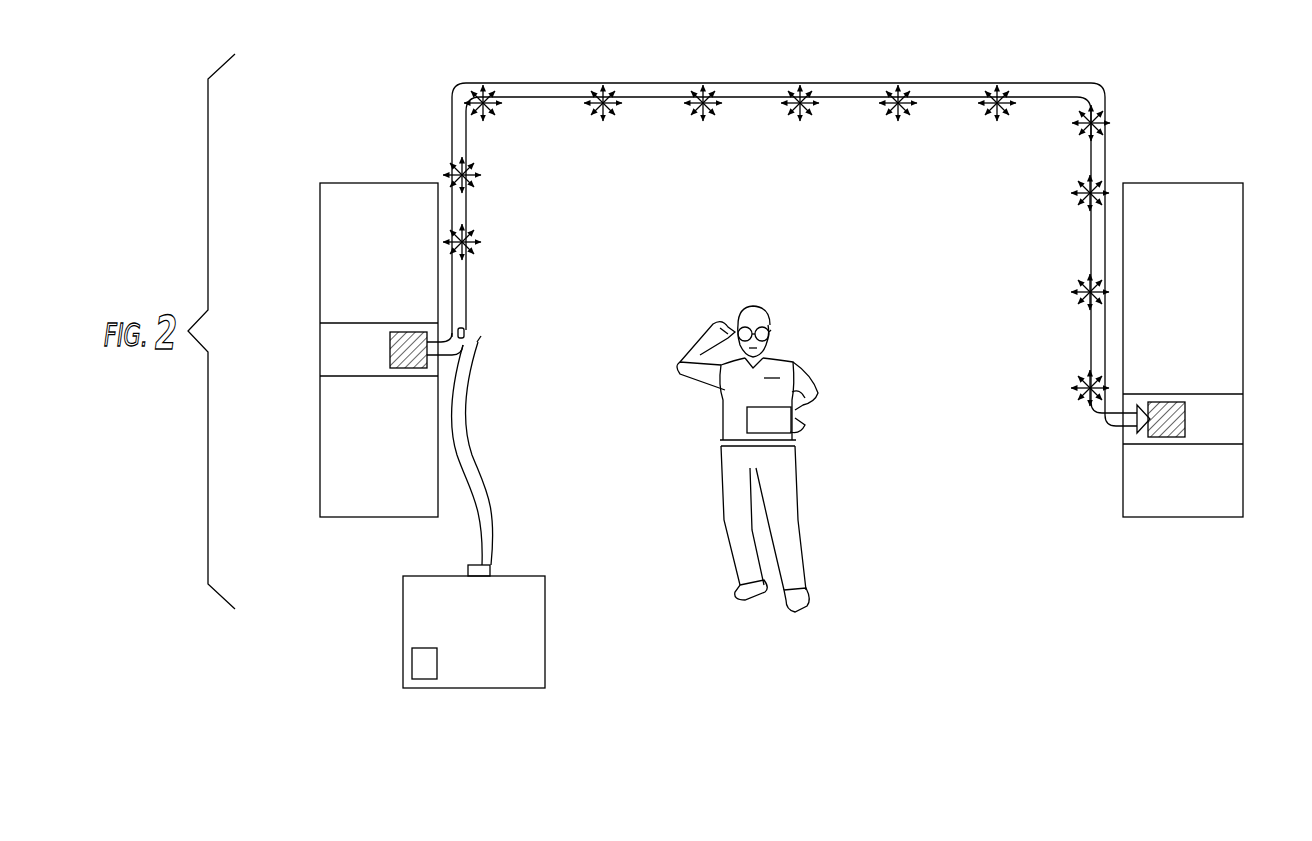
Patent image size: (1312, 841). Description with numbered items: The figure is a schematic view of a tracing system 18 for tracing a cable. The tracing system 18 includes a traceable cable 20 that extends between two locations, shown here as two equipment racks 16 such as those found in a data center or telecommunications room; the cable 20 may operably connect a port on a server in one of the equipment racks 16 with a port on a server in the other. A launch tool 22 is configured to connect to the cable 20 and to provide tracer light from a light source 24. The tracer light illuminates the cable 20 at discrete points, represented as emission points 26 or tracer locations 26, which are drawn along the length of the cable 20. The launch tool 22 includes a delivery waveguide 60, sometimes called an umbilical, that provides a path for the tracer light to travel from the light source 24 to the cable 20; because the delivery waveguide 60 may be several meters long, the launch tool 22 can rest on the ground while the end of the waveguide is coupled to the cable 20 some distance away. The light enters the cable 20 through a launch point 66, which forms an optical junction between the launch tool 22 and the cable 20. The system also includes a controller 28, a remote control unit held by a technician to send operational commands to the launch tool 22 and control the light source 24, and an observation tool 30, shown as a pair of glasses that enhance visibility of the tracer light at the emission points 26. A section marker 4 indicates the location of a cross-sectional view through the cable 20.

The section line for FIG. 4 is at (632, 147).
The equipment rack 16 is at (320, 198).
The tracing system 18 is at (999, 585).
The traceable cable 20 is at (740, 83).
The launch tool 22 is at (589, 682).
The light source 24 is at (420, 667).
The emission points 26 is at (800, 108).
The controller 28 is at (787, 418).
The observation tool 30 is at (768, 320).
The delivery waveguide 60 is at (490, 517).
The launch point 66 is at (482, 310).